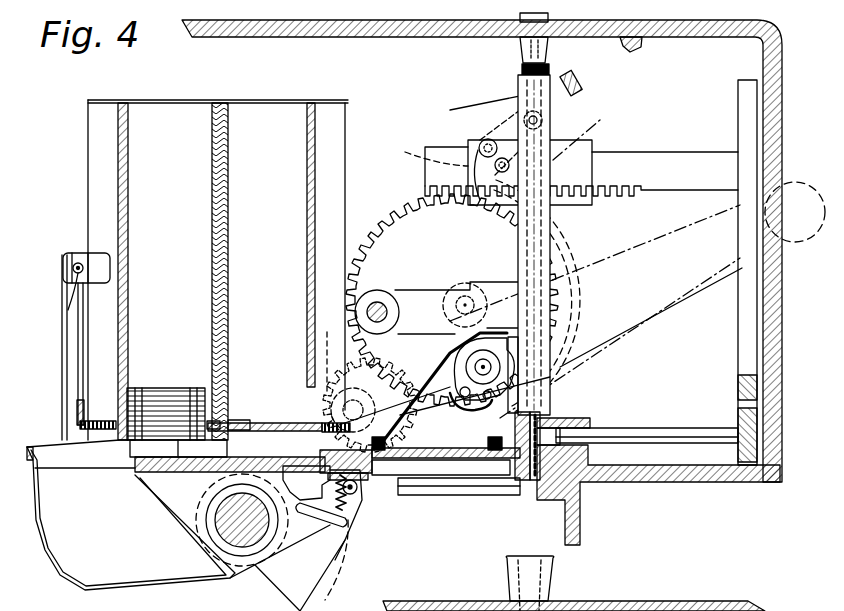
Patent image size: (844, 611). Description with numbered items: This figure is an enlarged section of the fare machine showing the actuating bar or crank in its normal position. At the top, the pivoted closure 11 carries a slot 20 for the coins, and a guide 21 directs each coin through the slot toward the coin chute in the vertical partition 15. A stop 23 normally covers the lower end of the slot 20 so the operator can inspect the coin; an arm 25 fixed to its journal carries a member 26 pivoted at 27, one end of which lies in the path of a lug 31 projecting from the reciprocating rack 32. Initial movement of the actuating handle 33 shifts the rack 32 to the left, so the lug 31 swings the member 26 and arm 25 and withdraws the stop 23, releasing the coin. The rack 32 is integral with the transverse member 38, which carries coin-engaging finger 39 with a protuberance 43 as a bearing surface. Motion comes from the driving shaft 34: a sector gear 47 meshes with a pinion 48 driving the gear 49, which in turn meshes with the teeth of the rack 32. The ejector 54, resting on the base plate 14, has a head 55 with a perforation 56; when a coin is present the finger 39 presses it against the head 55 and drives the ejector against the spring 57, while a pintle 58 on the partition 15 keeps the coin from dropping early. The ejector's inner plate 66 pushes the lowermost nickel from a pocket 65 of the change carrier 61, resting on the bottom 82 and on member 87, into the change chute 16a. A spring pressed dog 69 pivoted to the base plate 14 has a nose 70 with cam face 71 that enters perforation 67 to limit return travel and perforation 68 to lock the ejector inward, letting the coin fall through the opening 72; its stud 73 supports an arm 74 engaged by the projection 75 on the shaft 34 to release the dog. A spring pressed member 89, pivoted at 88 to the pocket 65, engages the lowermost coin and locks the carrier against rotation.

The pivoted closure 11 is at (356, 37).
The base plate 14 is at (176, 465).
The vertical partition 15 is at (556, 252).
The change chute 16a is at (131, 515).
The slot 20 is at (550, 47).
The guide 21 is at (520, 53).
The stop 23 is at (521, 69).
The arm 25 is at (486, 125).
The member 26 is at (493, 206).
The pivot 27 is at (558, 166).
The lug 31 is at (582, 143).
The rack 32 is at (665, 166).
The actuating handle 33 is at (794, 230).
The driving shaft 34 is at (238, 548).
The transverse member 38 is at (746, 316).
The finger 39 is at (669, 438).
The protuberance 43 is at (580, 418).
The sector gear 47 is at (326, 592).
The pinion 48 is at (330, 353).
The gear 49 is at (398, 222).
The ejector 54 is at (469, 459).
The head 55 is at (524, 482).
The perforation 56 is at (555, 418).
The spring 57 is at (494, 452).
The pintle 58 is at (458, 486).
The change carrier 61 is at (183, 100).
The pocket 65 is at (197, 271).
The coin ejecting plate 66 is at (235, 440).
The perforation 67 is at (310, 452).
The perforation 68 is at (441, 456).
The spring pressed dog 69 is at (354, 506).
The nose 70 is at (306, 483).
The cam face 71 is at (313, 440).
The opening 72 is at (392, 476).
The stud 73 is at (343, 524).
The arm 74 is at (305, 515).
The projection 75 is at (286, 540).
The bottom 82 is at (98, 416).
The member 87 is at (137, 450).
The pivot 88 is at (78, 262).
The spring pressed member 89 is at (62, 360).